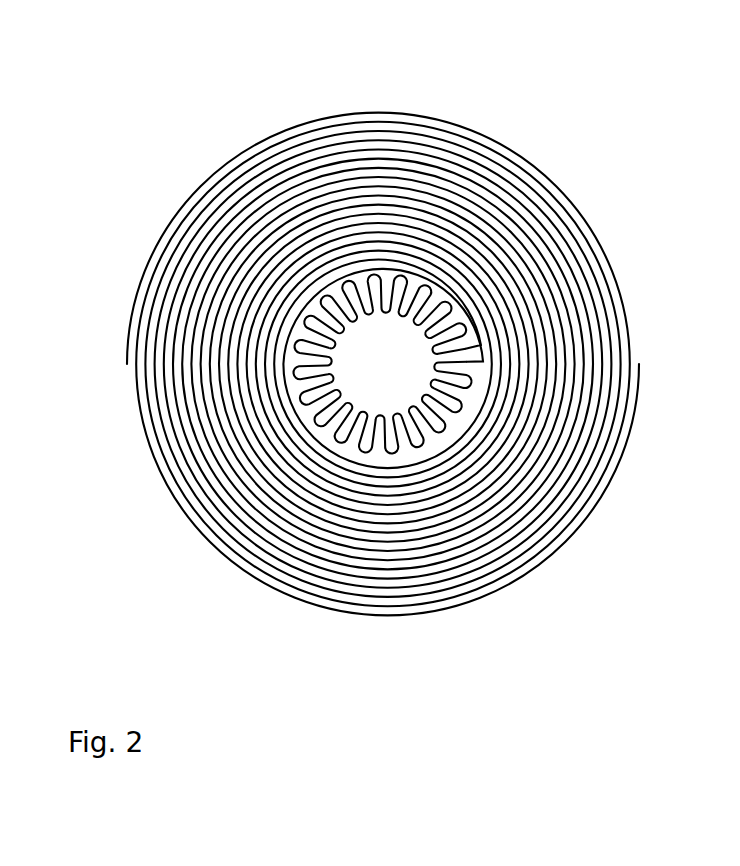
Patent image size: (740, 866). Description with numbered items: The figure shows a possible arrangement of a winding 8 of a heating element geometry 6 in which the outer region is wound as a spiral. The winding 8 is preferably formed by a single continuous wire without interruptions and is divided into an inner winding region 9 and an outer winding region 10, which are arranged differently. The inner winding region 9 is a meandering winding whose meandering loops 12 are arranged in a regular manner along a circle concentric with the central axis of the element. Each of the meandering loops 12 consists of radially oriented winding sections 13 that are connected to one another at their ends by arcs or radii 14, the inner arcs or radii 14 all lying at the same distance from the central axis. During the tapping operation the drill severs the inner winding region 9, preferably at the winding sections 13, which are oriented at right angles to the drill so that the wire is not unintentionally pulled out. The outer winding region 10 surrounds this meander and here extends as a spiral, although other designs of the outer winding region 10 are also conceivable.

The heating element geometry 6 is at (373, 315).
The winding 8 is at (186, 160).
The inner winding region 9 is at (297, 357).
The outer winding region 10 is at (292, 163).
The meandering loops 12 is at (460, 317).
The winding sections 13 is at (417, 288).
The arcs or radii 14 is at (357, 268).